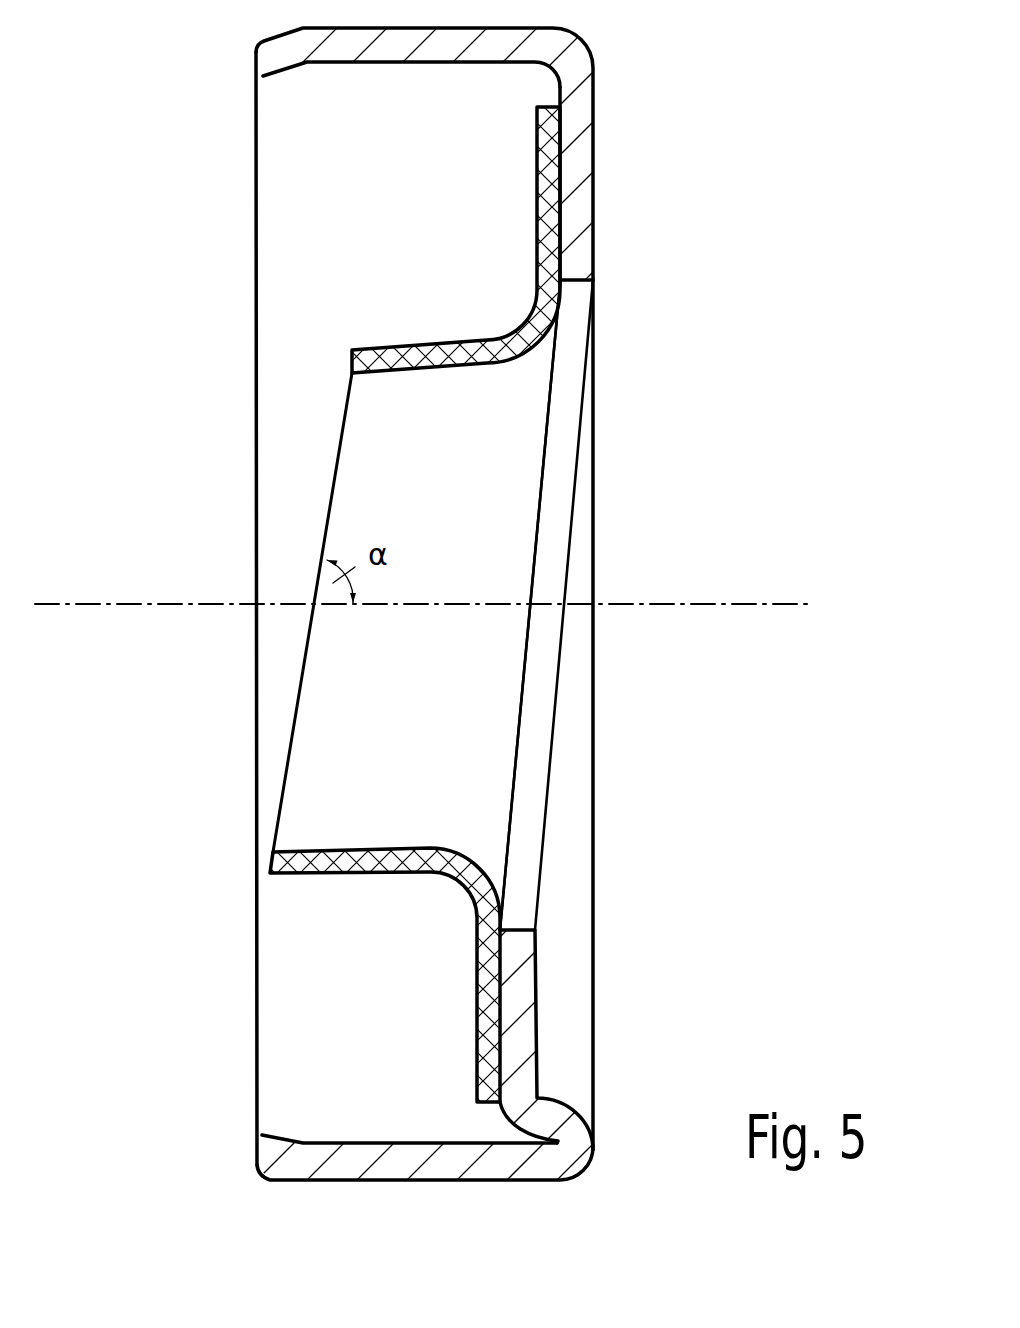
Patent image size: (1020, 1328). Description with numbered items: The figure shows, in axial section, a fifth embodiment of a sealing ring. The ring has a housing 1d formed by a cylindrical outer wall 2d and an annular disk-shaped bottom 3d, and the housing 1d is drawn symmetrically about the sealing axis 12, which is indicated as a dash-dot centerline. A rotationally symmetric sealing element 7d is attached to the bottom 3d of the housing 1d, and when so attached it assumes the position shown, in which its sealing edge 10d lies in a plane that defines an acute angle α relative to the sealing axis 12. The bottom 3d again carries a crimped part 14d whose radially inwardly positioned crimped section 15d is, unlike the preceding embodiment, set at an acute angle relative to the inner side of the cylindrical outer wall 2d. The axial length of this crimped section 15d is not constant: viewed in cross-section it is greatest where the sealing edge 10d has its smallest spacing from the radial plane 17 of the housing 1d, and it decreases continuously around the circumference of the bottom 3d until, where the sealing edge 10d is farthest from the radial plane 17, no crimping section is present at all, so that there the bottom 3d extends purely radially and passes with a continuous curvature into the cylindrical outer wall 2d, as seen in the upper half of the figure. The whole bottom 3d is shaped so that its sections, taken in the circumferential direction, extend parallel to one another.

The housing 1d is at (599, 106).
The cylindrical outer wall 2d is at (442, 1165).
The bottom 3d is at (575, 207).
The sealing element 7d is at (419, 320).
The sealing edge 10d is at (330, 483).
The sealing axis 12 is at (673, 603).
The crimped part 14d is at (572, 1125).
The crimped section 15d is at (547, 1117).
The radial plane 17 is at (255, 813).